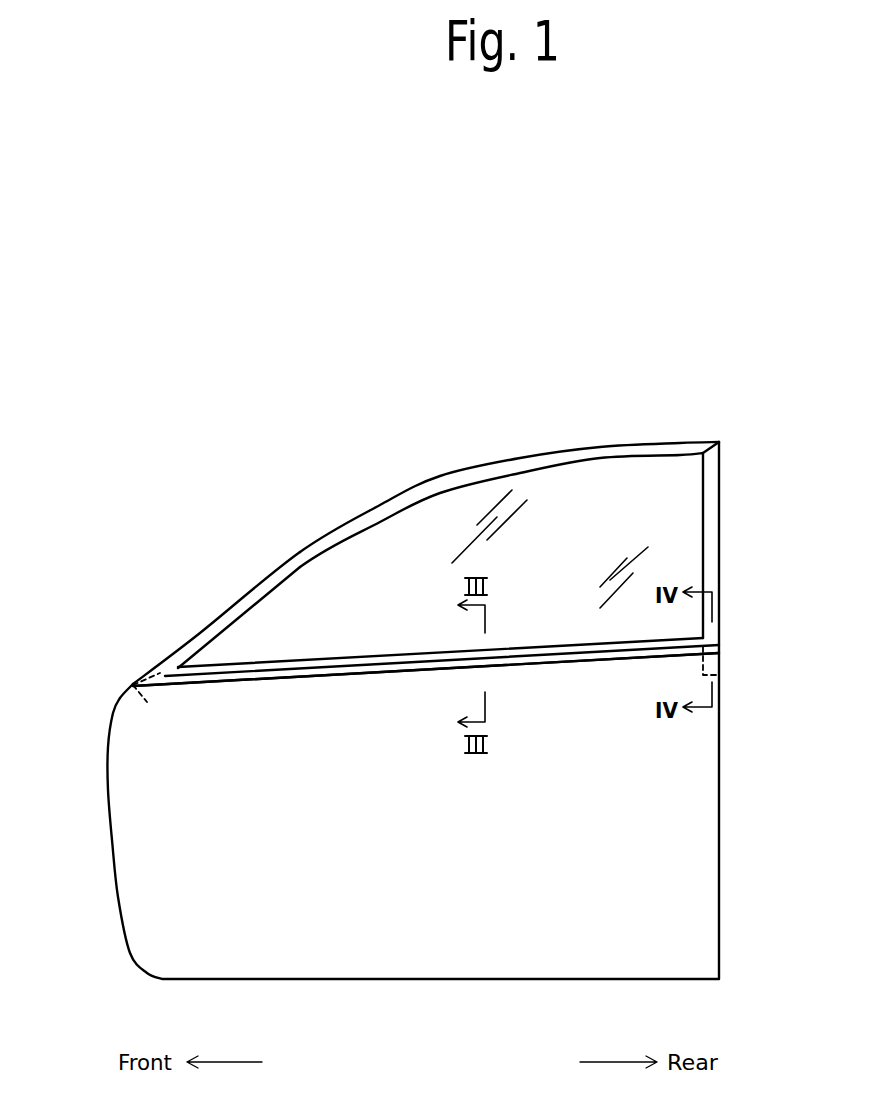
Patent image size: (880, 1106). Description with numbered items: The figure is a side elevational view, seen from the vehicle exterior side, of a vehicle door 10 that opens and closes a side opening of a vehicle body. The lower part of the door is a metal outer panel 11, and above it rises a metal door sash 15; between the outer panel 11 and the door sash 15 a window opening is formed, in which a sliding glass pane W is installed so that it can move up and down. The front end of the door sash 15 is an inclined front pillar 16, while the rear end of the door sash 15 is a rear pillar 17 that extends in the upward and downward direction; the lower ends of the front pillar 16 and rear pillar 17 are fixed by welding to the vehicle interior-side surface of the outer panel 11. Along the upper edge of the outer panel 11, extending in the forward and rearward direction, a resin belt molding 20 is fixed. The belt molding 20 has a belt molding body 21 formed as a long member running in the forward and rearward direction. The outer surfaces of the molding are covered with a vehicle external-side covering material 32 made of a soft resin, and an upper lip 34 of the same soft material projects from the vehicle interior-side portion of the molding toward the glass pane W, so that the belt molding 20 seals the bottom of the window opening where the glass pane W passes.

The vehicle door 10 is at (248, 490).
The outer panel 11 is at (147, 713).
The door sash 15 is at (427, 500).
The front pillar 16 is at (217, 630).
The rear pillar 17 is at (712, 545).
The belt molding 20 is at (281, 677).
The belt molding body 21 is at (365, 674).
The vehicle external-side covering material 32 is at (430, 664).
The upper lip 34 is at (382, 657).
The sliding glass pane W is at (552, 520).